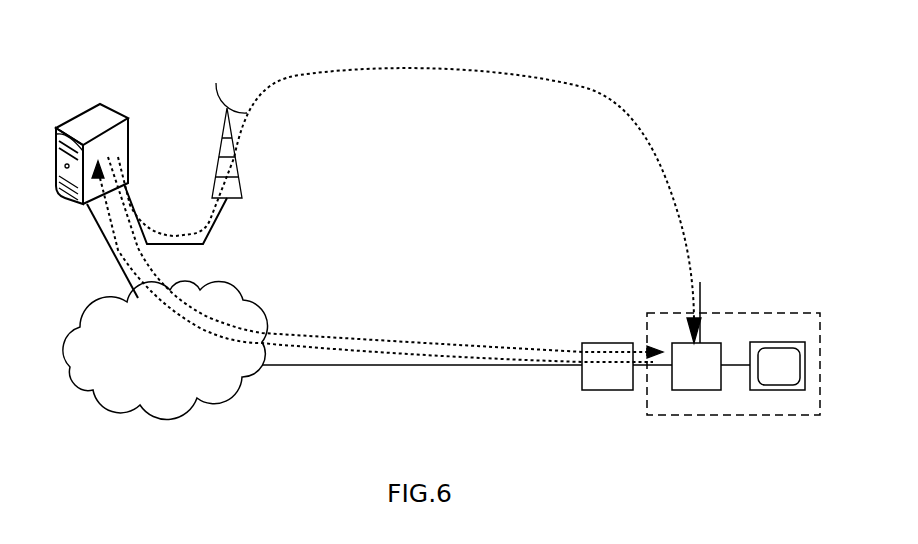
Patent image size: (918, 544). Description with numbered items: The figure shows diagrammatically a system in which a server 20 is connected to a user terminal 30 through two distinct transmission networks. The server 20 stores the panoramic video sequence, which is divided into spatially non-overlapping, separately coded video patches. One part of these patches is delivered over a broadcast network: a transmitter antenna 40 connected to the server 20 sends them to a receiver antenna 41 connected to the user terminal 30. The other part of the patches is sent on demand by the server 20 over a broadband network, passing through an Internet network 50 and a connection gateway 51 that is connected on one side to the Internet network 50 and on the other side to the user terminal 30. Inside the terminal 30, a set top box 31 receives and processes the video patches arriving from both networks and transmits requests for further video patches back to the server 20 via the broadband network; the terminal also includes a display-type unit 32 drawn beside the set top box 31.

The server 20 is at (103, 109).
The transmitter antenna 40 is at (232, 98).
The receiver antenna 41 is at (678, 292).
The user terminal 30 is at (738, 313).
The set top box 31 is at (708, 390).
The display unit 32 is at (788, 390).
The Internet network 50 is at (230, 393).
The connection gateway 51 is at (612, 390).